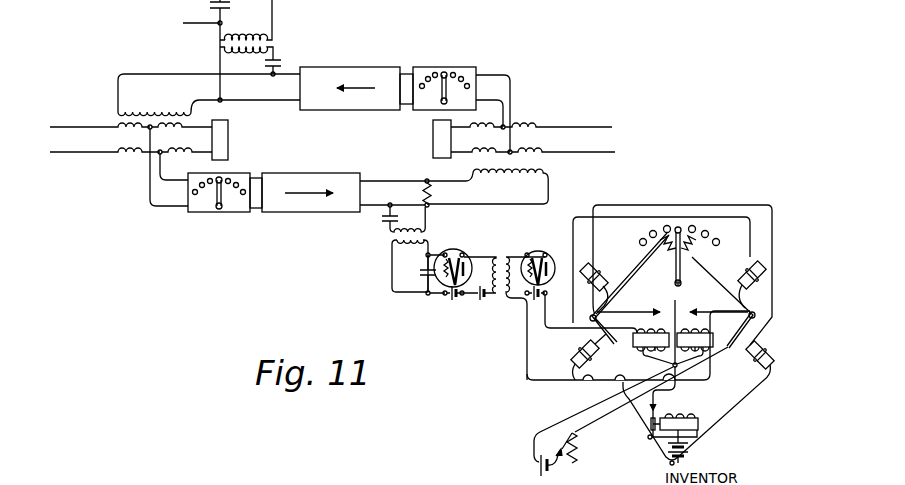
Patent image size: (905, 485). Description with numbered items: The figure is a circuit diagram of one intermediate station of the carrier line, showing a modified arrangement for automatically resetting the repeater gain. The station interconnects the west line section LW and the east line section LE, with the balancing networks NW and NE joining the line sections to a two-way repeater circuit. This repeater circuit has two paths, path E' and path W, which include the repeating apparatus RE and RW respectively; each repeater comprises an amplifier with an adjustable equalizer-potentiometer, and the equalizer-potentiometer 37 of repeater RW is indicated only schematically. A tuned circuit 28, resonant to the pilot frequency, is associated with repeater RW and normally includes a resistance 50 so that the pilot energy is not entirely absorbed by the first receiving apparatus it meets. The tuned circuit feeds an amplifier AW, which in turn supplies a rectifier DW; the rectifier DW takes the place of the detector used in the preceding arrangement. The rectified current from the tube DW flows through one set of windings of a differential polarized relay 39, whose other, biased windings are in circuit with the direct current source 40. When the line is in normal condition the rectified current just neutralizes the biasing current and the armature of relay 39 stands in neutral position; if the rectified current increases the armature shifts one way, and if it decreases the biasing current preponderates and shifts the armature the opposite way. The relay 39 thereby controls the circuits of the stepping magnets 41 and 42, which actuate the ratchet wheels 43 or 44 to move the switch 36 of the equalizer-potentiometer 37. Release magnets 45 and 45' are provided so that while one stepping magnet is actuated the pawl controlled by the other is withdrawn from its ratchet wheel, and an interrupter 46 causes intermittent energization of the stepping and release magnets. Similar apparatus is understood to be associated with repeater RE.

The repeater path E' is at (209, 74).
The west line section LW is at (95, 134).
The west network NW is at (208, 140).
The equalizer-potentiometer 37 is at (190, 211).
The west repeating apparatus RW is at (313, 184).
The east repeating apparatus RE is at (348, 78).
The east network NE is at (433, 139).
The east line section LE is at (602, 142).
The repeater path W is at (454, 186).
The resistance 50 is at (409, 193).
The tuned circuit 28 is at (408, 249).
The amplifier AW is at (480, 250).
The rectifier DW is at (545, 250).
The ratchet wheel 44 is at (659, 262).
The switch 36 is at (683, 240).
The ratchet wheel 43 is at (662, 252).
The differential polarized relay 39 is at (651, 300).
The stepping magnet 42 is at (763, 279).
The release magnet 45' is at (606, 286).
The stepping magnet 41 is at (570, 357).
The release magnet 45 is at (713, 397).
The interrupter 46 is at (680, 420).
The direct current source 40 is at (536, 436).